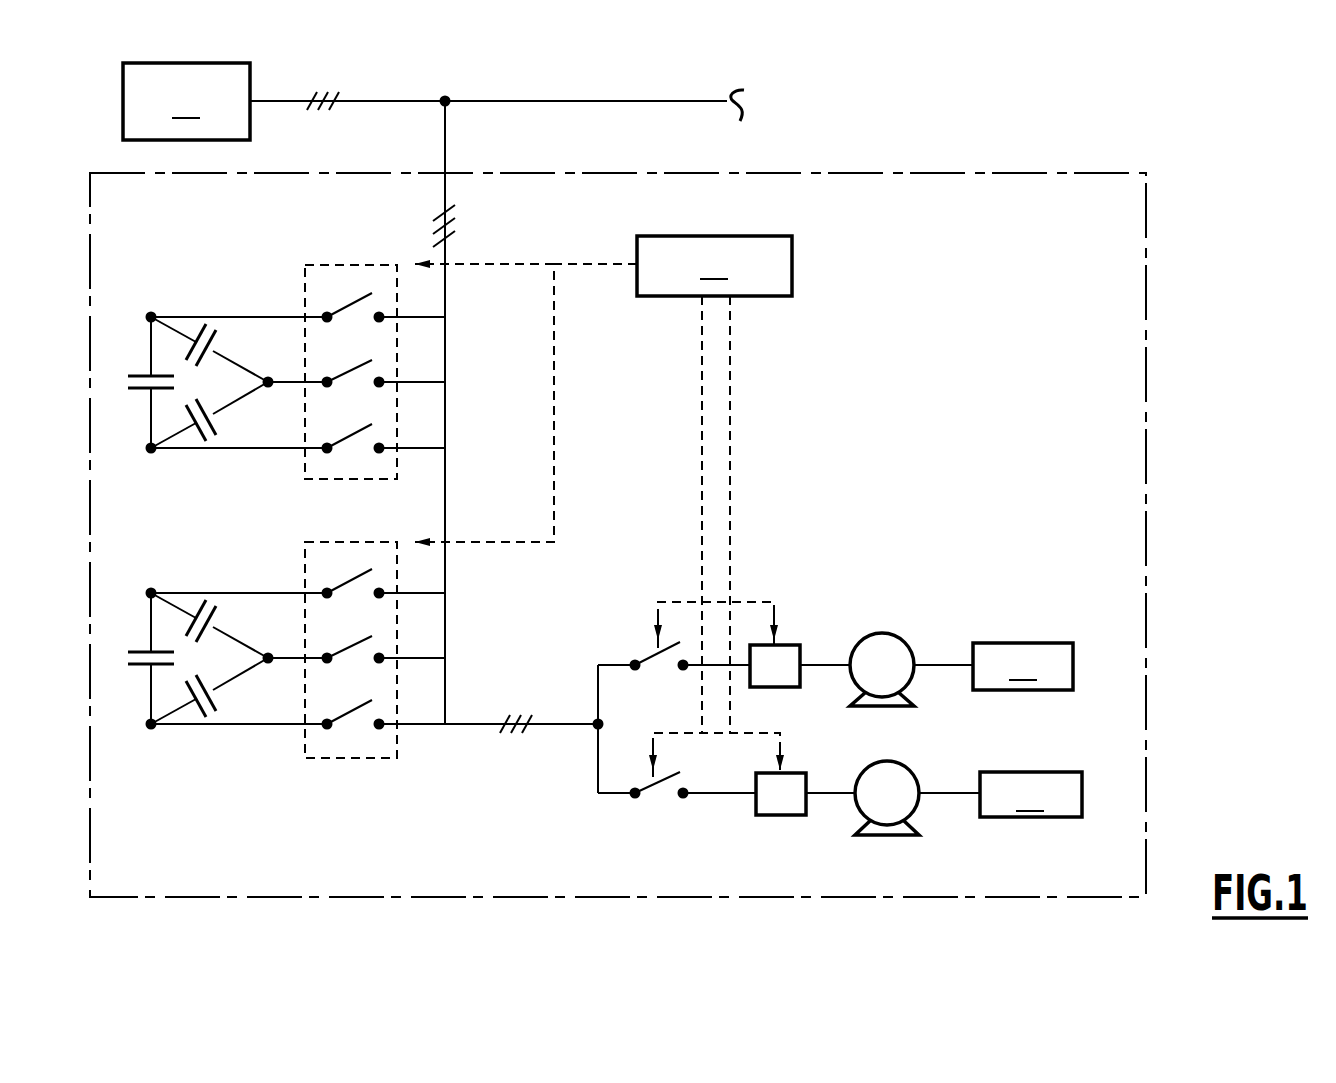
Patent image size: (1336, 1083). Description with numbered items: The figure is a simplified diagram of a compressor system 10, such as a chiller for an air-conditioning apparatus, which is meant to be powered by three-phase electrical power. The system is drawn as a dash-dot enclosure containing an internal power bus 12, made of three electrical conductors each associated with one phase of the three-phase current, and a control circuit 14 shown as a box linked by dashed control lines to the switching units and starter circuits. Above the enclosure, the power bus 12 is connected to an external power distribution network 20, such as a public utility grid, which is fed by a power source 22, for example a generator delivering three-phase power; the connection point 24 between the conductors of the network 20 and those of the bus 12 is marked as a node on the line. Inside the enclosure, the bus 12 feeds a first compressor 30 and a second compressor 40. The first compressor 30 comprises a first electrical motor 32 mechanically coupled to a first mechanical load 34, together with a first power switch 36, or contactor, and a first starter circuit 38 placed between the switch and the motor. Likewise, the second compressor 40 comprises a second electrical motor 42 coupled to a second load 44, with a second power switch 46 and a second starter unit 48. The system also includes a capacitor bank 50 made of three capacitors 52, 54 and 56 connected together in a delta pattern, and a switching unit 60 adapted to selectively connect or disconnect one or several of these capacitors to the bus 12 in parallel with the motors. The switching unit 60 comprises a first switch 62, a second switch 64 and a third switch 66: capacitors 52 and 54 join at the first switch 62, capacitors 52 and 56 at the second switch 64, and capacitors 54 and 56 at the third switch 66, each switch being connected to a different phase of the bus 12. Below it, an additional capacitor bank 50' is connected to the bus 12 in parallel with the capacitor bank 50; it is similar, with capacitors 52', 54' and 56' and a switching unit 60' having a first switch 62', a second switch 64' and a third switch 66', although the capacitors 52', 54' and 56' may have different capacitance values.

The compressor system 10 is at (940, 140).
The internal power bus 12 is at (462, 198).
The control circuit 14 is at (603, 506).
The external power distribution network 20 is at (573, 95).
The power source 22 is at (284, 101).
The connection point 24 is at (447, 98).
The first compressor 30 is at (922, 618).
The first electrical motor 32 is at (878, 650).
The first mechanical load 34 is at (1023, 666).
The first power switch 36 is at (640, 650).
The first starter circuit 38 is at (775, 676).
The second compressor 40 is at (935, 758).
The second electrical motor 42 is at (892, 808).
The second load 44 is at (1031, 794).
The second power switch 46 is at (660, 805).
The second starter unit 48 is at (770, 805).
The capacitor bank 50 is at (212, 317).
The capacitor 52 is at (209, 312).
The capacitor 54 is at (137, 382).
The capacitor 56 is at (209, 441).
The switching unit 60 is at (317, 330).
The first switch 62 is at (384, 258).
The second switch 64 is at (412, 362).
The third switch 66 is at (412, 428).
The additional capacitor bank 50' is at (237, 727).
The capacitor 52' is at (209, 587).
The capacitor 54' is at (137, 658).
The capacitor 56' is at (209, 717).
The switching unit 60' is at (341, 703).
The first switch 62' is at (384, 540).
The second switch 64' is at (415, 638).
The third switch 66' is at (415, 704).